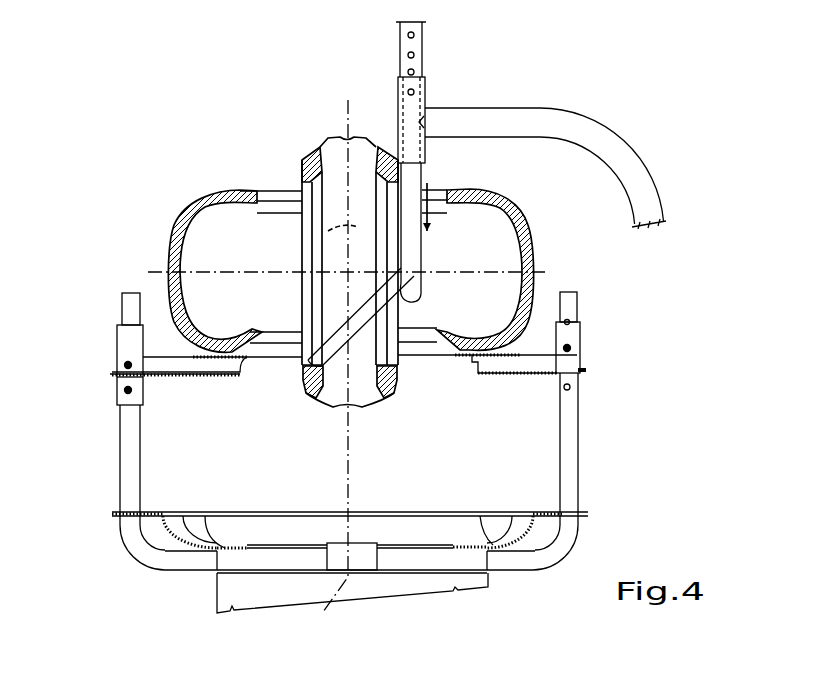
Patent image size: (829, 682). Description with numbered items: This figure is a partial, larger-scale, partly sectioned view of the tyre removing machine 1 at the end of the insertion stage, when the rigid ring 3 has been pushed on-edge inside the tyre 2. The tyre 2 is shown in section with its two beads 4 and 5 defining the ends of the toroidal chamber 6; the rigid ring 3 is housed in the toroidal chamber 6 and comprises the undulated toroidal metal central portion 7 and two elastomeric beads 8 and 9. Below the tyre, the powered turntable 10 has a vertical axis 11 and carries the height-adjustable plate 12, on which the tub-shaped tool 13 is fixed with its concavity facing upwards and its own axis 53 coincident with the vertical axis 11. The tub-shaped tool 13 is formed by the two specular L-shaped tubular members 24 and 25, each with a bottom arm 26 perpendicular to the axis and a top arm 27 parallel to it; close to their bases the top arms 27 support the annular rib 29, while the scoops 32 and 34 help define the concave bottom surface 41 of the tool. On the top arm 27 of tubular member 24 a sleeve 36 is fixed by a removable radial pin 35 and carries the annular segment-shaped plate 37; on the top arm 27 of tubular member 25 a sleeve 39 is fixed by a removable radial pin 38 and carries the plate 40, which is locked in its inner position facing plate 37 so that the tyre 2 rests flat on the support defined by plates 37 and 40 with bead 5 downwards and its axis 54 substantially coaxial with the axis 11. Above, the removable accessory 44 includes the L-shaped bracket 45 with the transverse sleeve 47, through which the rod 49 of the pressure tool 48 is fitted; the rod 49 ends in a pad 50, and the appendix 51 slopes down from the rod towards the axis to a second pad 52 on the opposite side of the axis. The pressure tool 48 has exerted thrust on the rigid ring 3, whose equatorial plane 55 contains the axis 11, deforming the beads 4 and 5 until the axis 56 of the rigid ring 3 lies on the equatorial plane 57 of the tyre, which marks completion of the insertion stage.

The tyre removing machine 1 is at (368, 219).
The tyre 2 is at (535, 258).
The rigid ring 3 is at (362, 414).
The bead 4 is at (436, 238).
The bead 5 is at (445, 338).
The toroidal chamber 6 is at (507, 246).
The central portion 7 is at (328, 230).
The bead 8 is at (305, 168).
The bead 9 is at (392, 145).
The turntable 10 is at (339, 601).
The vertical axis 11 is at (361, 628).
The plate 12 is at (397, 588).
The tub-shaped tool 13 is at (114, 523).
The tubular member 24 is at (586, 480).
The tubular member 25 is at (117, 540).
The bottom arm 26 is at (188, 563).
The top arm 27 is at (127, 420).
The annular rib 29 is at (549, 510).
The scoop 32 is at (538, 549).
The scoop 34 is at (172, 535).
The radial pin 35 is at (571, 350).
The sleeve 36 is at (571, 334).
The plate 37 is at (510, 374).
The radial pin 38 is at (124, 366).
The sleeve 39 is at (130, 337).
The plate 40 is at (195, 370).
The concave bottom surface 41 is at (280, 540).
The removable accessory 44 is at (620, 133).
The L-shaped bracket 45 is at (553, 127).
The transverse sleeve 47 is at (424, 94).
The pressure tool 48 is at (429, 174).
The rod 49 is at (418, 44).
The pad 50 is at (422, 297).
The appendix 51 is at (340, 325).
The pad 52 is at (305, 386).
The axis 53 is at (326, 612).
The axis 54 is at (298, 185).
The equatorial plane 55 is at (349, 120).
The axis 56 is at (312, 238).
The equatorial plane 57 is at (149, 270).